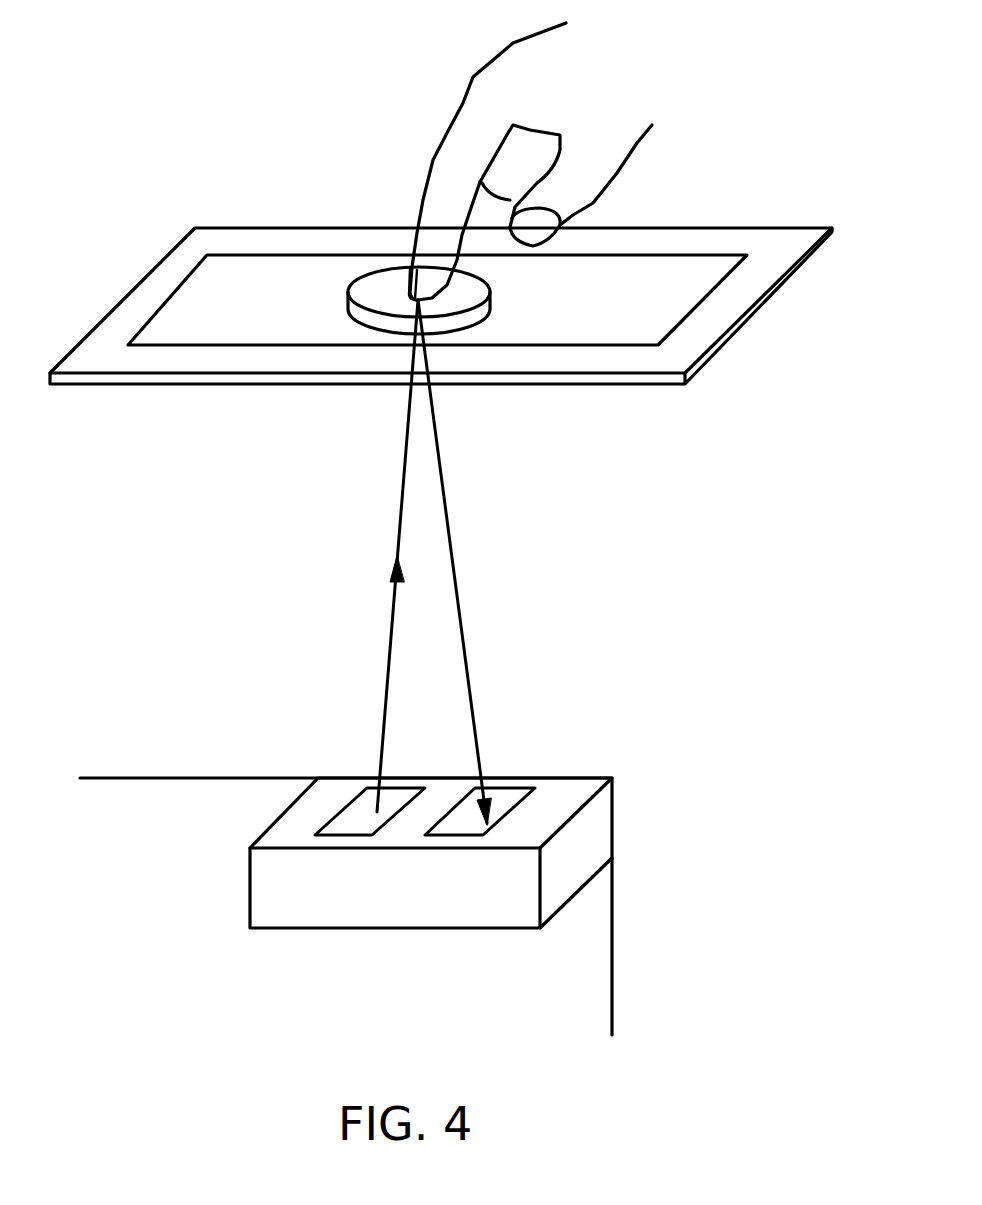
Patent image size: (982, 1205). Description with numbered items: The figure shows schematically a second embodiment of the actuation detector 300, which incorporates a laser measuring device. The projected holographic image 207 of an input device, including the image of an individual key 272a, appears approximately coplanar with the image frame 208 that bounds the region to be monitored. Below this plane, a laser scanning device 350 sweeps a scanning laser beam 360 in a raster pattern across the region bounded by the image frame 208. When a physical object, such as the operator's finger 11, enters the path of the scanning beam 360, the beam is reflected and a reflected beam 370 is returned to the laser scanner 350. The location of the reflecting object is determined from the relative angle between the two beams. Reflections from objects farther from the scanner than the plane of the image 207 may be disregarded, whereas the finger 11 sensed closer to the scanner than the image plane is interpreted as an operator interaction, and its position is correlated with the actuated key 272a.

The operator's finger 11 is at (422, 197).
The key 272a is at (373, 285).
The image frame 208 is at (758, 237).
The holographic image 207 is at (642, 333).
The scanning laser beam 360 is at (395, 538).
The reflected beam 370 is at (465, 623).
The laser scanning device 350 is at (573, 792).
The actuation detector 300 is at (197, 848).